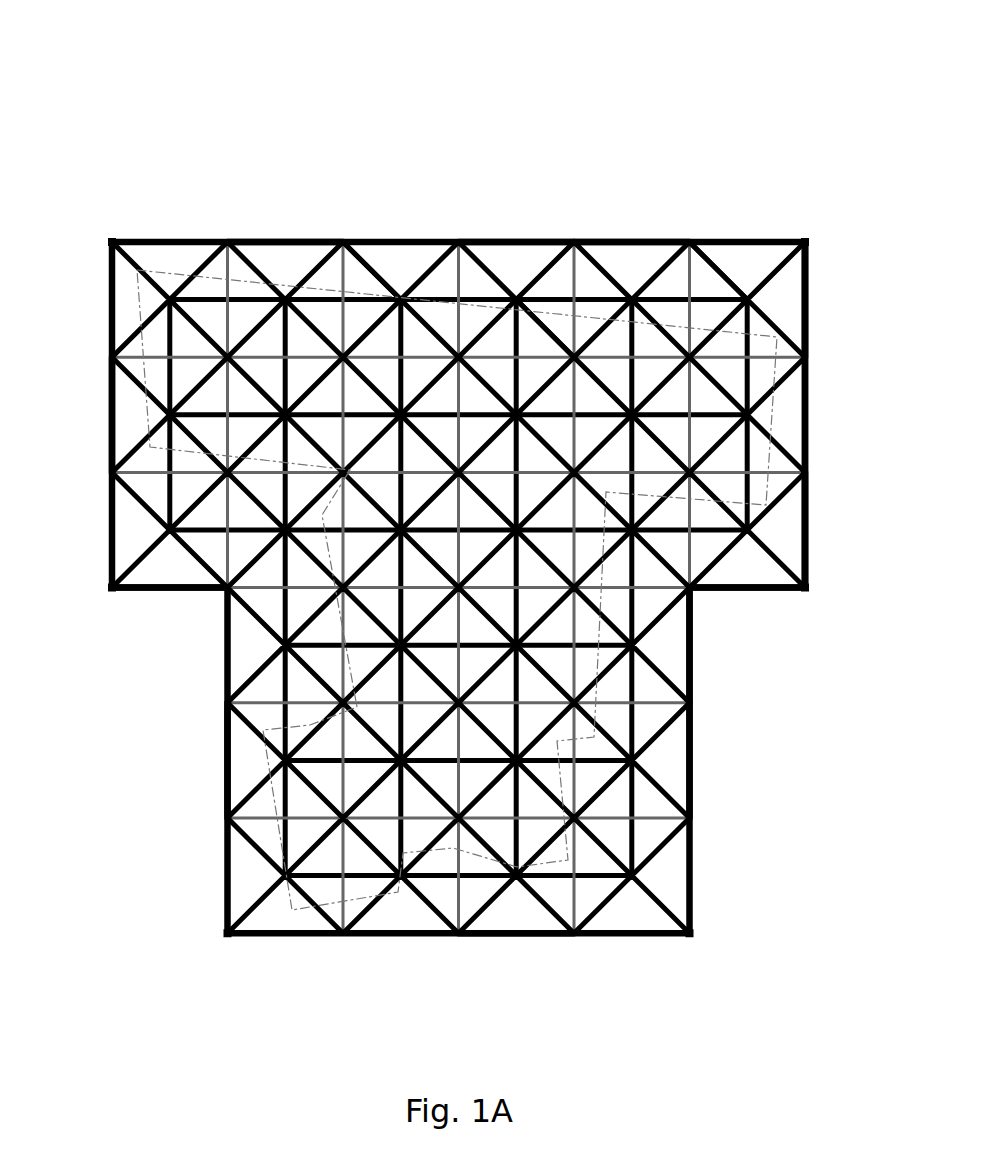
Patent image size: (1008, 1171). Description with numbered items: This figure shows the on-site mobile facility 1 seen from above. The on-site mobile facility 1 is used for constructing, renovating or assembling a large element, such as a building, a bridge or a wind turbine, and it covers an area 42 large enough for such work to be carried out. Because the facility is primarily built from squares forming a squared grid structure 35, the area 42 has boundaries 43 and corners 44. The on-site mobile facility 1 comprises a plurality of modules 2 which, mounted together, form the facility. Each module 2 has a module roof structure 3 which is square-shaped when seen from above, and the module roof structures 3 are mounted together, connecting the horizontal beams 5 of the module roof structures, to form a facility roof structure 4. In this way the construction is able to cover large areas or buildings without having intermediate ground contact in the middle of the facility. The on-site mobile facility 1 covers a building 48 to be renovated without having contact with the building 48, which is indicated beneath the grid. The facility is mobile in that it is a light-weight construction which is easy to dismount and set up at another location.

The on-site mobile facility 1 is at (765, 67).
The module 2 is at (140, 278).
The module roof structure 3 is at (365, 263).
The facility roof structure 4 is at (548, 333).
The horizontal beam 5 is at (807, 293).
The squared grid structure 35 is at (283, 242).
The area 42 is at (630, 241).
The boundary 43 is at (475, 241).
The corner 44 is at (112, 241).
The building 48 is at (170, 268).